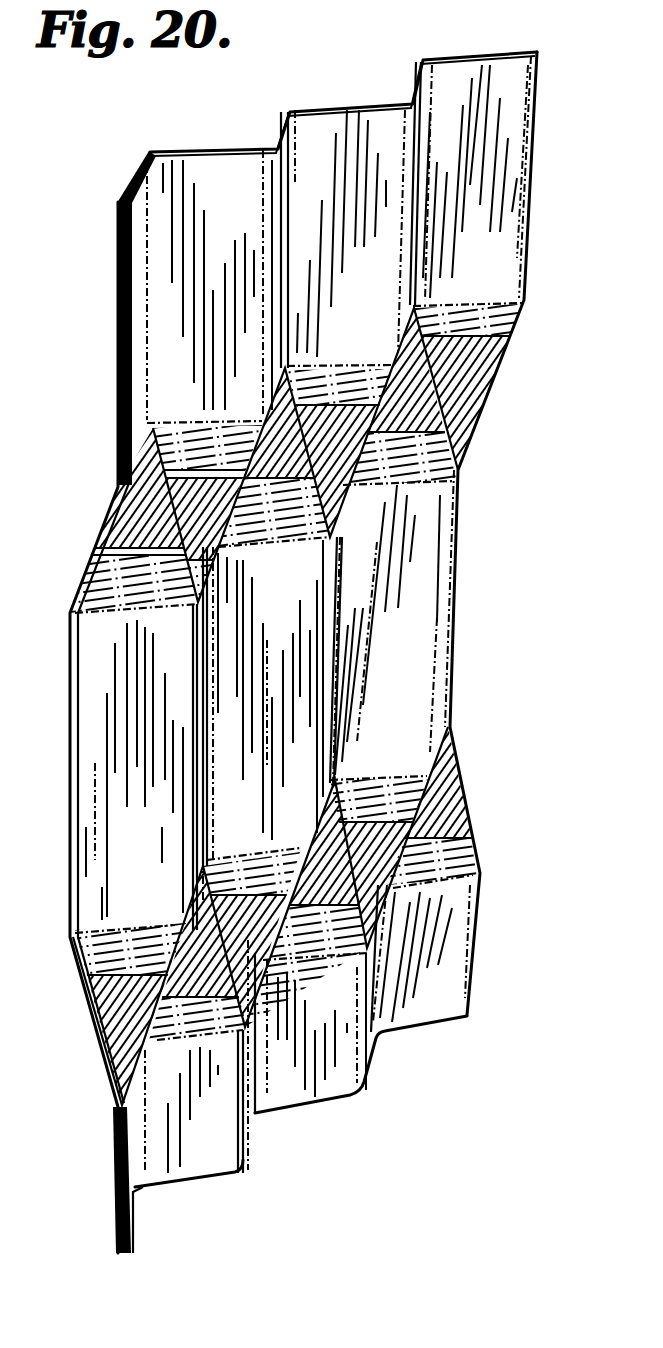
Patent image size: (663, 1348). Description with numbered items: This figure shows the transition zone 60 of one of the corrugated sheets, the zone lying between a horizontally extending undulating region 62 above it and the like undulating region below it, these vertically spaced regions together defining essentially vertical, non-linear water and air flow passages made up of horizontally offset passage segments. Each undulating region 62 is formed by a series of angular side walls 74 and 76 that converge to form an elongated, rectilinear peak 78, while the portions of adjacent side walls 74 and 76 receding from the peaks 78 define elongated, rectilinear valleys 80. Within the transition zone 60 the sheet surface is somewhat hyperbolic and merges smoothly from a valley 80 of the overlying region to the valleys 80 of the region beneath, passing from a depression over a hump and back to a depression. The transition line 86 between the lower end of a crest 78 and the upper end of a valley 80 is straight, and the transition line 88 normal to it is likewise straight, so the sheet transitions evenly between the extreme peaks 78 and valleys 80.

The transition zone 60 is at (490, 367).
The undulating region 62 is at (530, 210).
The angular side wall 74 is at (133, 180).
The angular side wall 76 is at (208, 163).
The peak 78 is at (118, 302).
The valley 80 is at (150, 151).
The transition line 86 is at (115, 503).
The transition line 88 is at (446, 384).